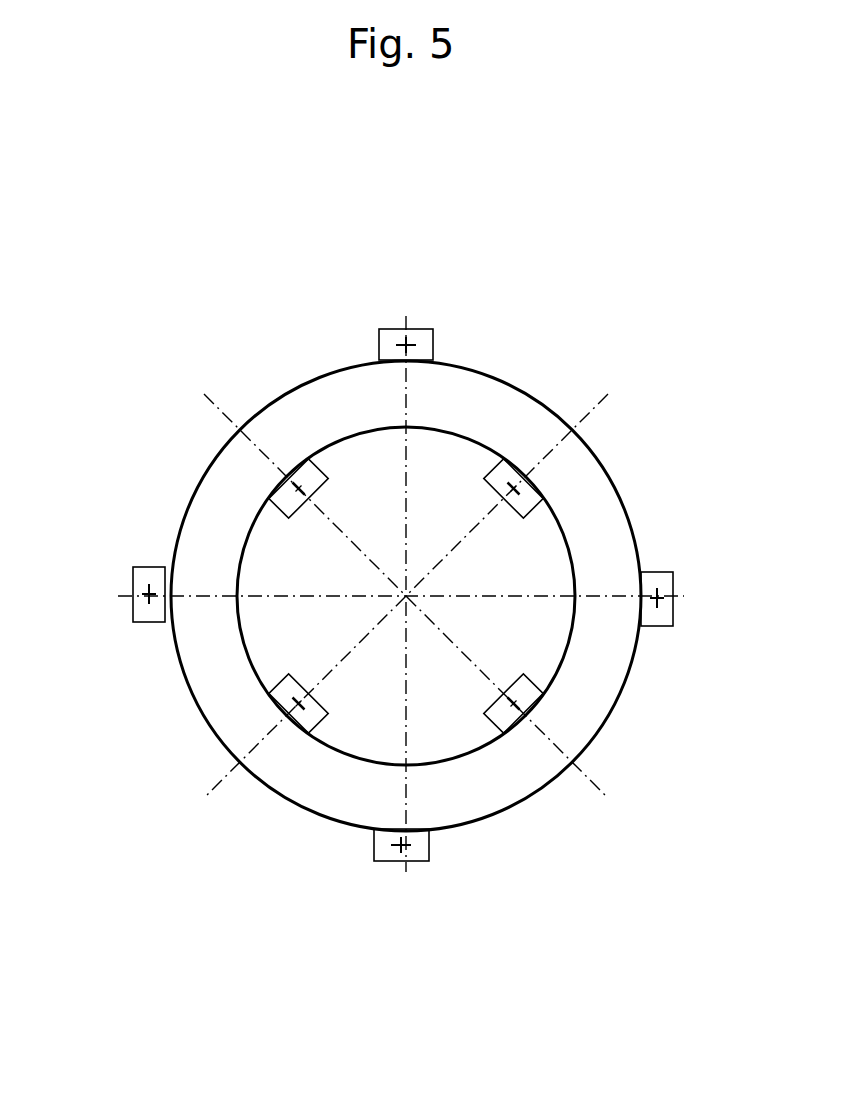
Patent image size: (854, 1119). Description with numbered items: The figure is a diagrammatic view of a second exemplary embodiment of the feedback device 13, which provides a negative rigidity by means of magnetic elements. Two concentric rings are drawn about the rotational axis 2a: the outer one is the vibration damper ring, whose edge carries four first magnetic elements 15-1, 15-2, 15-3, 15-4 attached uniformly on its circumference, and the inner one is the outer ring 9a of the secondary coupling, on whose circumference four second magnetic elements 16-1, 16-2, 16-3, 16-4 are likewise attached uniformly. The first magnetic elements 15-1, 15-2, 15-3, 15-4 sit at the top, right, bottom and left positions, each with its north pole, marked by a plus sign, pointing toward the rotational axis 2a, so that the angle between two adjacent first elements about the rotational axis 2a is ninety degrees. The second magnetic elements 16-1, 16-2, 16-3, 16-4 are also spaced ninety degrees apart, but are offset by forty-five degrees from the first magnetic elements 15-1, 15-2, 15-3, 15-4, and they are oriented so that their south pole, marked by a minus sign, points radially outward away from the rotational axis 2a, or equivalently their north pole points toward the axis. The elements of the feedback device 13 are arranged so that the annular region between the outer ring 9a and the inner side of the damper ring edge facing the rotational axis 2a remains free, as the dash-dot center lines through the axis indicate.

The rotational axis 2a is at (406, 596).
The outer ring of the secondary coupling 9a is at (542, 547).
The feedback device 13 is at (336, 338).
The first magnetic element 15-1 is at (433, 330).
The first magnetic element 15-2 is at (673, 625).
The first magnetic element 15-3 is at (430, 862).
The first magnetic element 15-4 is at (133, 622).
The second magnetic element 16-1 is at (503, 475).
The second magnetic element 16-2 is at (516, 697).
The second magnetic element 16-3 is at (303, 723).
The second magnetic element 16-4 is at (298, 480).